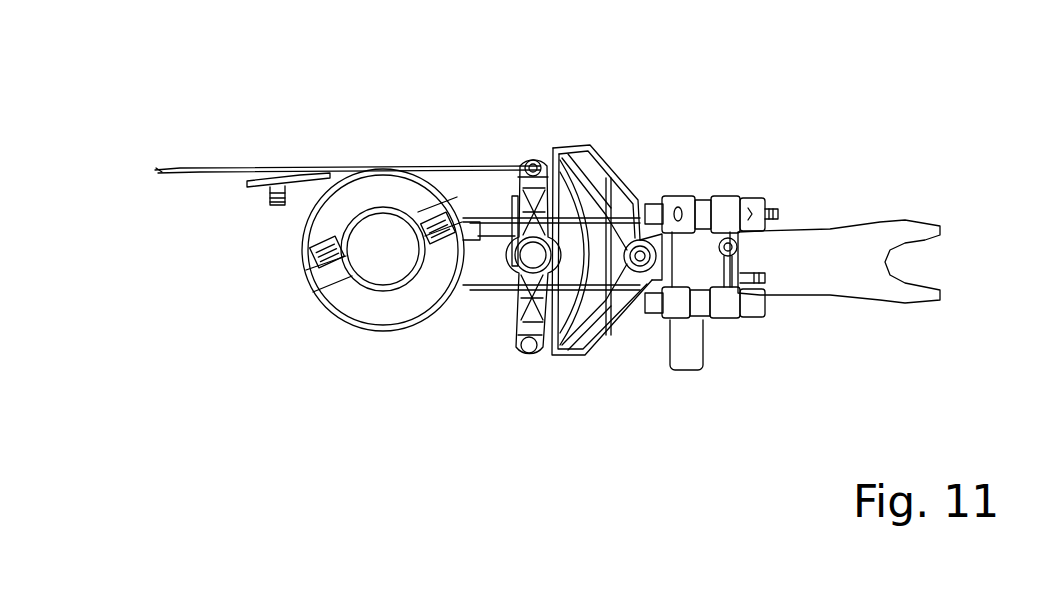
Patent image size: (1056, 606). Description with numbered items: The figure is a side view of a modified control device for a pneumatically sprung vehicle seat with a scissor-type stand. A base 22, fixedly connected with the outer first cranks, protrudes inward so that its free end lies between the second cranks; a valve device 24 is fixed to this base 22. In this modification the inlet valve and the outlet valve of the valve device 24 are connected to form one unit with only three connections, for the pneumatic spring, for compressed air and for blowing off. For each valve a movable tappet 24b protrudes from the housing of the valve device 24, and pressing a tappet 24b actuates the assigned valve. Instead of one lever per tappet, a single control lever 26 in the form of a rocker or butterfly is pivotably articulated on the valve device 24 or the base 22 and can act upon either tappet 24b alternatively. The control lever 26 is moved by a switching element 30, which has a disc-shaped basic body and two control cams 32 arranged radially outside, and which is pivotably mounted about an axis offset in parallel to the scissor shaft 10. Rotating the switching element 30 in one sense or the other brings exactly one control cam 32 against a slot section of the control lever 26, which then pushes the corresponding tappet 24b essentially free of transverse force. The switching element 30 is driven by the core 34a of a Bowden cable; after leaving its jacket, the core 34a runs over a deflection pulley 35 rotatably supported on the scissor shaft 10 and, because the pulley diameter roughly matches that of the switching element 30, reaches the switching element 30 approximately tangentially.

The scissor shaft 10 is at (372, 253).
The base 22 is at (821, 247).
The valve device 24 is at (743, 302).
The tappet 24b is at (663, 196).
The control lever 26 is at (600, 343).
The switching element 30 is at (470, 246).
The control cam 32 is at (533, 160).
The core 34a is at (455, 166).
The deflection pulley 35 is at (348, 294).